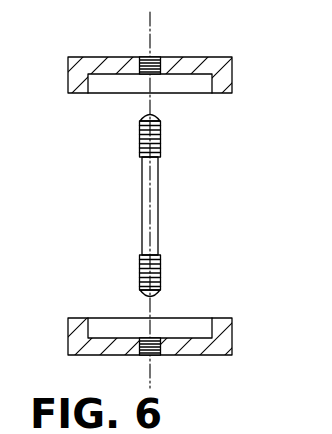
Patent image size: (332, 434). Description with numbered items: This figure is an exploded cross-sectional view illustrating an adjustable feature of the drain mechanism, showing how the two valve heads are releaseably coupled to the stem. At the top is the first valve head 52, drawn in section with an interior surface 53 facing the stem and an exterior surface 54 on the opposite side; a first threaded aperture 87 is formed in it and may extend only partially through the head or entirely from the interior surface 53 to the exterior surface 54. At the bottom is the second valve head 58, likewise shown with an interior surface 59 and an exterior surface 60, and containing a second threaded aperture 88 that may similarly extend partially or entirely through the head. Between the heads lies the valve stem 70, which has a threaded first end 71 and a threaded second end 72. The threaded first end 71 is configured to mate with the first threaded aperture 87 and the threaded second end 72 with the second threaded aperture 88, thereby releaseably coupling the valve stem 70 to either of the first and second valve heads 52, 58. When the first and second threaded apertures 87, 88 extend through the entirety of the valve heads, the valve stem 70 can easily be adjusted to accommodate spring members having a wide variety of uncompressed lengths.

The first valve head 52 is at (215, 67).
The exterior surface 54 is at (93, 59).
The interior surface 53 is at (112, 76).
The first threaded aperture 87 is at (157, 58).
The valve stem 70 is at (158, 203).
The threaded first end 71 is at (160, 135).
The threaded second end 72 is at (160, 270).
The second valve head 58 is at (223, 340).
The interior surface 59 is at (110, 338).
The exterior surface 60 is at (82, 355).
The second threaded aperture 88 is at (158, 350).